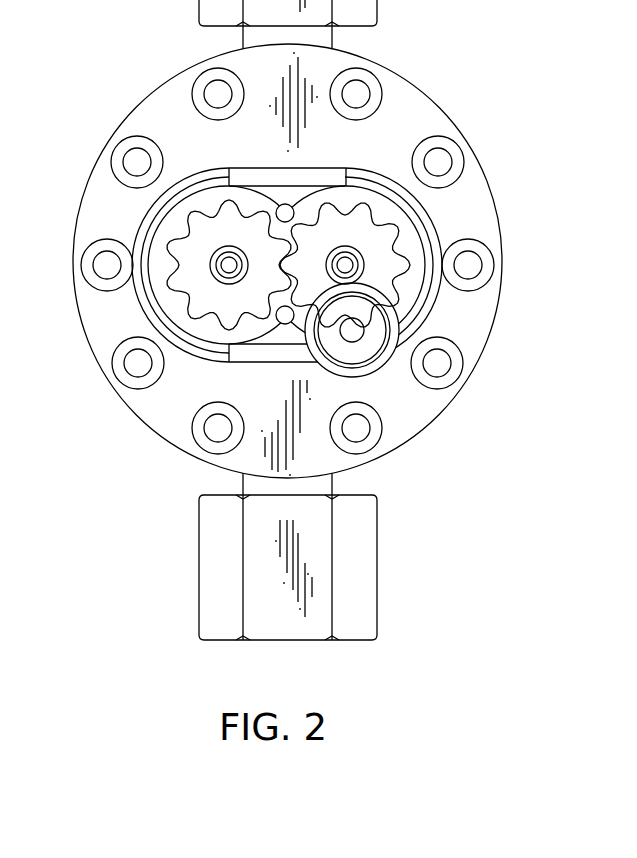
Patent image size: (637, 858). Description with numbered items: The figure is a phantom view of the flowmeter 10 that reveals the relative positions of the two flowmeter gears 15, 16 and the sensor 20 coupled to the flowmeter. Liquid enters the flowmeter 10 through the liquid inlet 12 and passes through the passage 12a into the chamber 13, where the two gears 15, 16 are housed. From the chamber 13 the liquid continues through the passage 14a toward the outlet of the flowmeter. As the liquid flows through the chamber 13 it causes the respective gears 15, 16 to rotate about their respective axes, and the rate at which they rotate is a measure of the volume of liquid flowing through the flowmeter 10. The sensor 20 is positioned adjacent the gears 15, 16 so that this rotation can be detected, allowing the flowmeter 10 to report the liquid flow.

The flowmeter 10 is at (459, 84).
The liquid inlet 12 is at (302, 641).
The passage 12a is at (280, 322).
The chamber 13 is at (304, 213).
The passage 14a is at (279, 207).
The flowmeter gear 15 is at (205, 238).
The flowmeter gear 16 is at (380, 247).
The sensor 20 is at (357, 338).